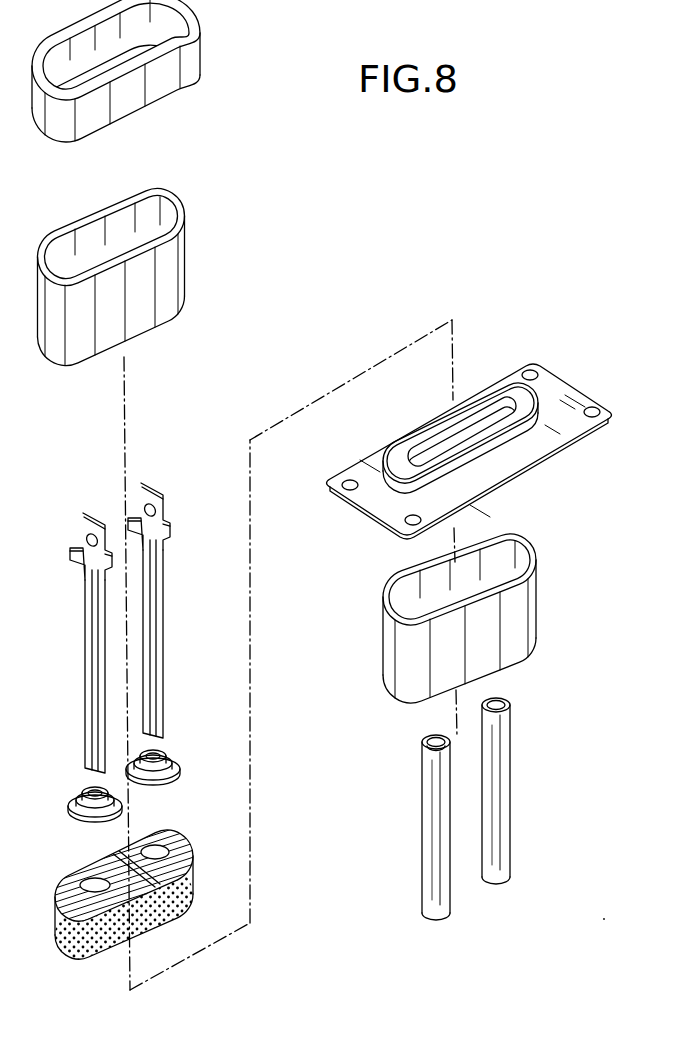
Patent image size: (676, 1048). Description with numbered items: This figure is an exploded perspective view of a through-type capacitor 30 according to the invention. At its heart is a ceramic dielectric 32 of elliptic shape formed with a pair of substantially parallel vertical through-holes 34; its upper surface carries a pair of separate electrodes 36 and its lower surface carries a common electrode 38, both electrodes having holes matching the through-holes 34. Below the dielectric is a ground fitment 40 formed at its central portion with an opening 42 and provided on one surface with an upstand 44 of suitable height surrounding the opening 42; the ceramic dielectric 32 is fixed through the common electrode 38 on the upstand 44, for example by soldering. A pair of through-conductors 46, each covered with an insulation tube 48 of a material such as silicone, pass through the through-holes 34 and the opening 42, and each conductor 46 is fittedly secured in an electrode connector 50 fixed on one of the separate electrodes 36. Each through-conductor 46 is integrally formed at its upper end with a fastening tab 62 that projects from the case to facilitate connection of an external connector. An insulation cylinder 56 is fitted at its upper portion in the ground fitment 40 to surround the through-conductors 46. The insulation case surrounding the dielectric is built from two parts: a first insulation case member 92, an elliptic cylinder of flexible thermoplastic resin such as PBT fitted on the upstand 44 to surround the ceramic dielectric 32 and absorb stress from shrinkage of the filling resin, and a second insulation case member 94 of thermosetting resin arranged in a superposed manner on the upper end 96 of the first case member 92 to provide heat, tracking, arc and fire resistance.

The through-type capacitor 30 is at (357, 277).
The ceramic dielectric 32 is at (128, 880).
The through-holes 34 is at (83, 878).
The separate electrodes 36 is at (63, 880).
The common electrode 38 is at (160, 917).
The ground fitment 40 is at (458, 455).
The opening 42 is at (453, 435).
The upstand 44 is at (421, 464).
The through-conductors 46 is at (124, 628).
The insulation tubes 48 is at (427, 792).
The electrode connectors 50 is at (85, 792).
The insulation cylinder 56 is at (512, 613).
The fastening tabs 62 is at (82, 525).
The first insulation case member 92 is at (125, 268).
The second insulation case member 94 is at (152, 103).
The upper end 96 is at (172, 196).